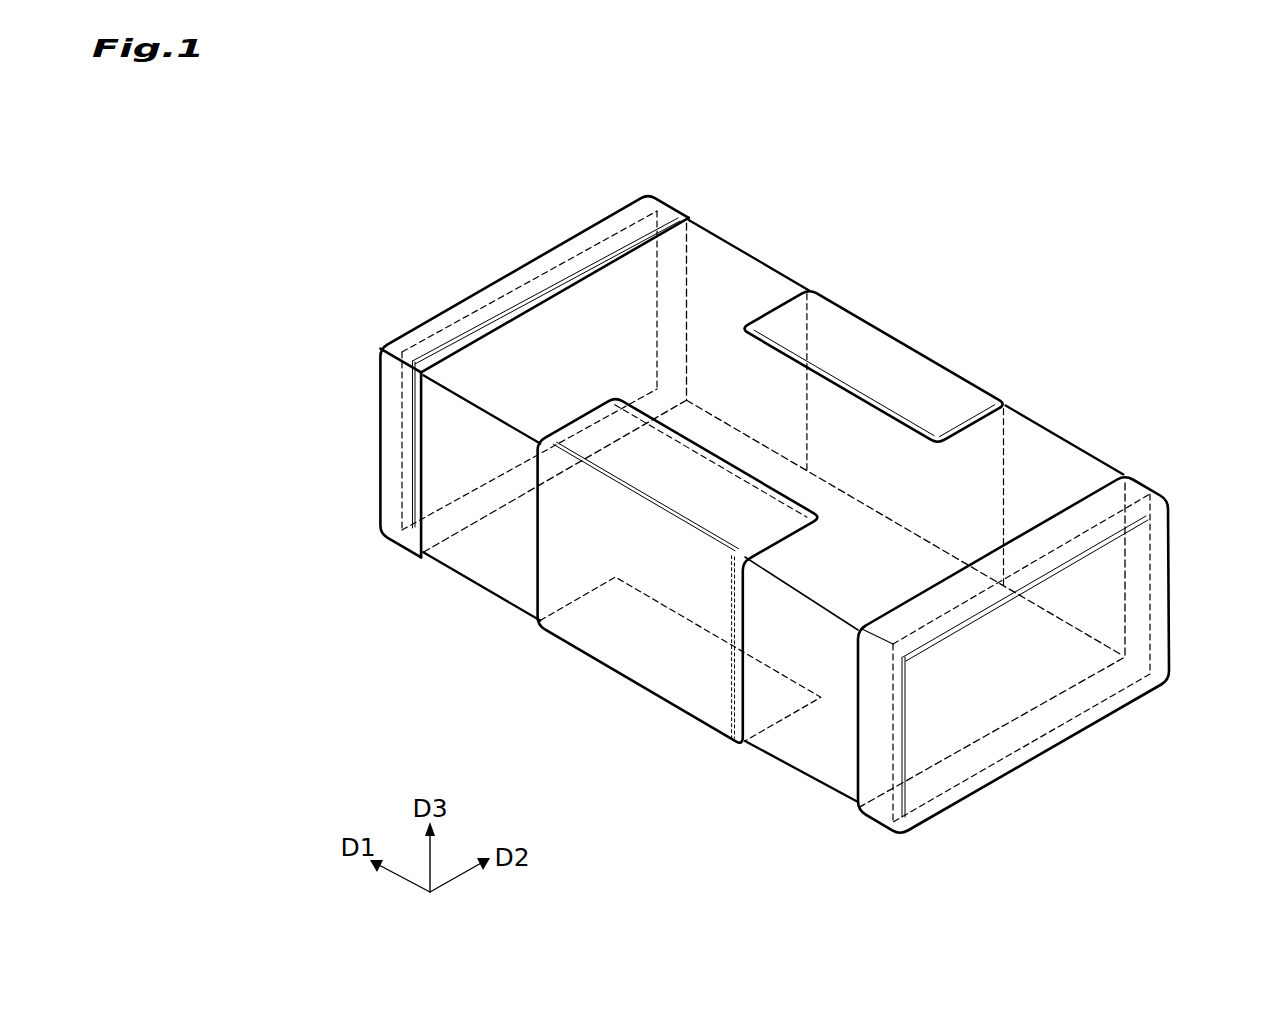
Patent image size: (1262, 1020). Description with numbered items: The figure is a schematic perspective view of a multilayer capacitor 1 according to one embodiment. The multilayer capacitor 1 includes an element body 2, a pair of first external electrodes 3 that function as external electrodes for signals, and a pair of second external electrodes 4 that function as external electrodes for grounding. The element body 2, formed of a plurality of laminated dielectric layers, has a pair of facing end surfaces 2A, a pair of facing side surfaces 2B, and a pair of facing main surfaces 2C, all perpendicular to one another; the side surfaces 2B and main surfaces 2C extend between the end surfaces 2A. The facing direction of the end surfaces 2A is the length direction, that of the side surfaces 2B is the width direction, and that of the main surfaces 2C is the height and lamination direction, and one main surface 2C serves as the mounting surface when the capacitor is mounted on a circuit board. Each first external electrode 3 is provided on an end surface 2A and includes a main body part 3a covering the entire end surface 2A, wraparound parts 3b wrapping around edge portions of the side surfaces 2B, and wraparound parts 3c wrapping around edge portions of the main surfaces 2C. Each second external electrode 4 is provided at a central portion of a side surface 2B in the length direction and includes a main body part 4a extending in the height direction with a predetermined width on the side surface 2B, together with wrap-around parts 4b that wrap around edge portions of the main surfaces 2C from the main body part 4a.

The multilayer capacitor 1 is at (1170, 297).
The element body 2 is at (765, 257).
The end surface 2A is at (478, 372).
The side surface 2B is at (1050, 482).
The main surface 2C is at (718, 270).
The first external electrode 3 is at (503, 263).
The main body part 3a is at (555, 278).
The wraparound part 3b is at (674, 275).
The wraparound part 3c is at (640, 265).
The second external electrode 4 is at (888, 311).
The main body part 4a is at (977, 477).
The wrap-around part 4b is at (822, 327).